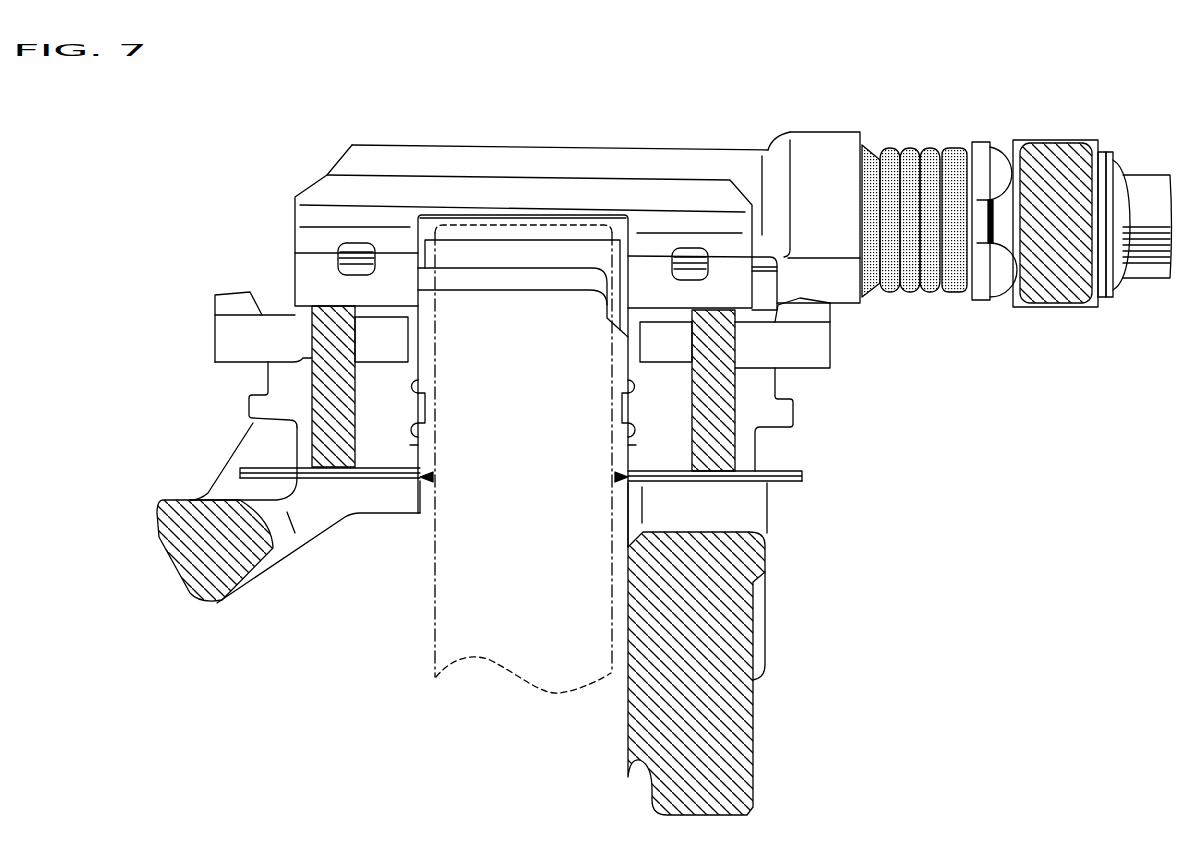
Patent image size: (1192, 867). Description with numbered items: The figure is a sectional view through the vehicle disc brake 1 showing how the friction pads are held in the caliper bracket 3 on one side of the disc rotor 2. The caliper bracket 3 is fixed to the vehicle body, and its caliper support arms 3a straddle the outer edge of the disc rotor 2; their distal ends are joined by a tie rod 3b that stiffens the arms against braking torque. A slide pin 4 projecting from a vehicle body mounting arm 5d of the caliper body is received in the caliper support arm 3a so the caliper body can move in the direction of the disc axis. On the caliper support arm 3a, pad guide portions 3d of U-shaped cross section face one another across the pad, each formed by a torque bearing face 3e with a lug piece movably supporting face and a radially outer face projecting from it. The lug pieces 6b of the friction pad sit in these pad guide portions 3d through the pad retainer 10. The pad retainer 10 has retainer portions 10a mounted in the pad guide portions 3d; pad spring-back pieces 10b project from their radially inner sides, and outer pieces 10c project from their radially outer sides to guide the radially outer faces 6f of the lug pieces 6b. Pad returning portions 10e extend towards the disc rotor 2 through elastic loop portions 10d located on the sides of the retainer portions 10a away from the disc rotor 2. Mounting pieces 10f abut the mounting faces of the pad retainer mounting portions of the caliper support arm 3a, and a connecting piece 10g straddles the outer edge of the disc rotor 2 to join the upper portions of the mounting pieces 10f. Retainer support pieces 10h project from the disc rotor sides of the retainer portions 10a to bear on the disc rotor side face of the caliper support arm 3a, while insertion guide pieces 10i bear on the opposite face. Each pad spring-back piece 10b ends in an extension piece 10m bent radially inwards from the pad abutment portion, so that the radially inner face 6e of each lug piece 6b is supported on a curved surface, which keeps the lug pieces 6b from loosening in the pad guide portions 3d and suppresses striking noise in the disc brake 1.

The assembly 1 is at (619, 73).
The disc rotor 2 is at (436, 608).
The caliper bracket 3 is at (762, 703).
The caliper support arm 3a is at (662, 162).
The tie rod 3b is at (212, 595).
The pad guide portion 3d is at (361, 495).
The torque bearing face 3e is at (420, 386).
The slide pin 4 is at (983, 288).
The vehicle body mounting arm 5d is at (1053, 295).
The lug piece 6b is at (313, 387).
The radially inner face 6e is at (333, 479).
The radially outer face 6f is at (318, 305).
The pad retainer 10 is at (482, 170).
The retainer portion 10a is at (413, 447).
The pad spring-back piece 10b is at (433, 478).
The outer piece 10c is at (392, 310).
The elastic loop portion 10d is at (215, 338).
The pad returning portion 10e is at (400, 347).
The mounting piece 10f is at (320, 250).
The connecting piece 10g is at (555, 190).
The retainer support piece 10h is at (425, 410).
The insertion guide piece 10i is at (255, 408).
The extension piece 10m is at (252, 467).